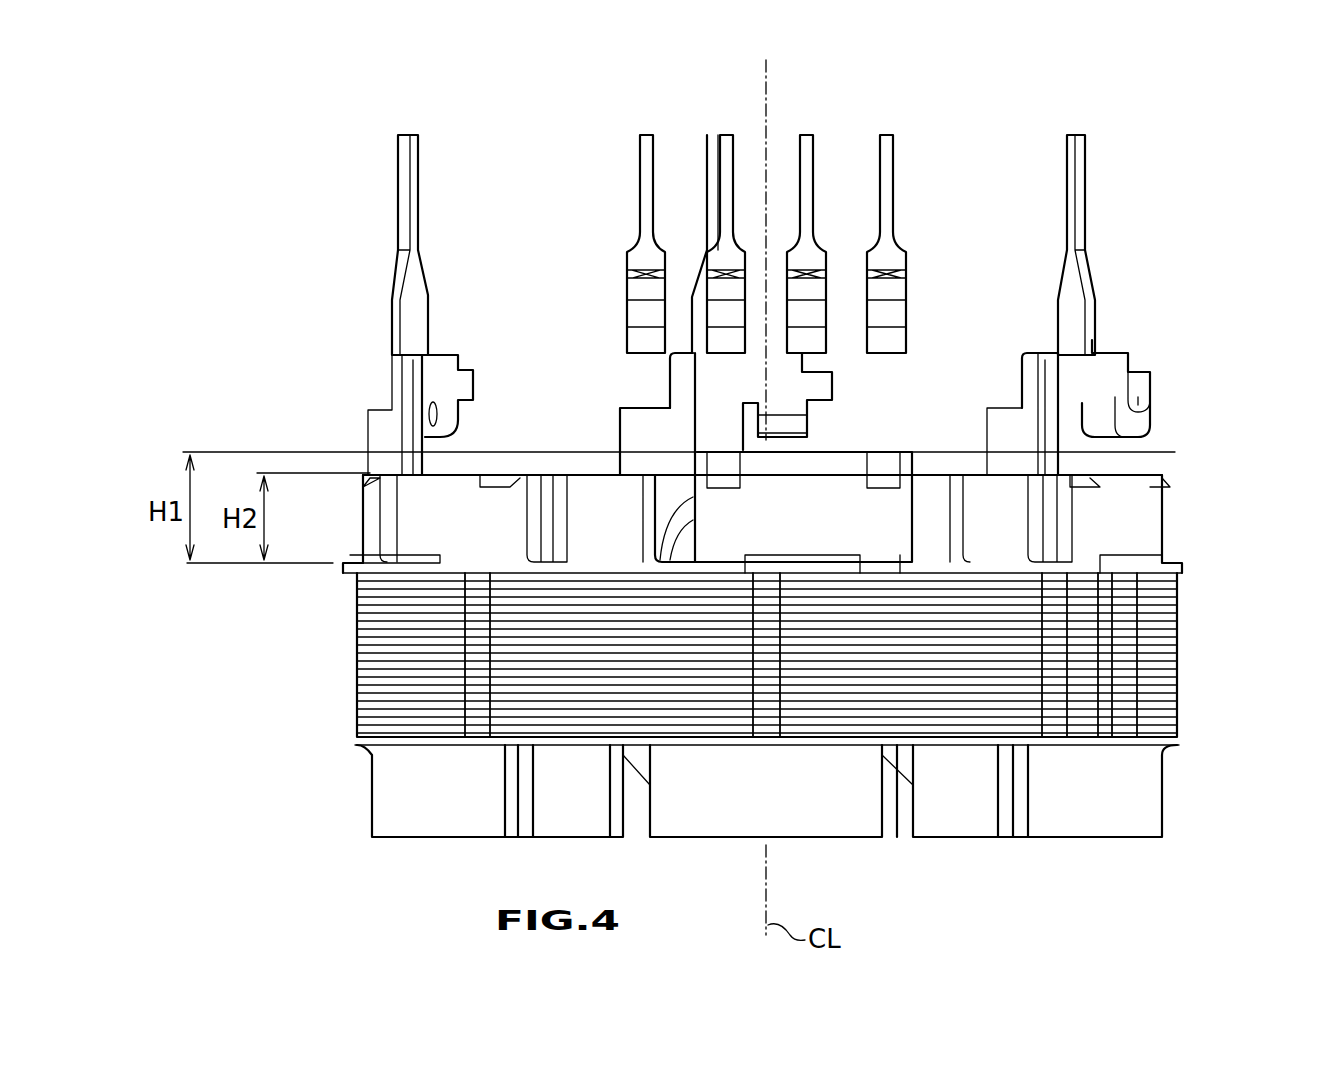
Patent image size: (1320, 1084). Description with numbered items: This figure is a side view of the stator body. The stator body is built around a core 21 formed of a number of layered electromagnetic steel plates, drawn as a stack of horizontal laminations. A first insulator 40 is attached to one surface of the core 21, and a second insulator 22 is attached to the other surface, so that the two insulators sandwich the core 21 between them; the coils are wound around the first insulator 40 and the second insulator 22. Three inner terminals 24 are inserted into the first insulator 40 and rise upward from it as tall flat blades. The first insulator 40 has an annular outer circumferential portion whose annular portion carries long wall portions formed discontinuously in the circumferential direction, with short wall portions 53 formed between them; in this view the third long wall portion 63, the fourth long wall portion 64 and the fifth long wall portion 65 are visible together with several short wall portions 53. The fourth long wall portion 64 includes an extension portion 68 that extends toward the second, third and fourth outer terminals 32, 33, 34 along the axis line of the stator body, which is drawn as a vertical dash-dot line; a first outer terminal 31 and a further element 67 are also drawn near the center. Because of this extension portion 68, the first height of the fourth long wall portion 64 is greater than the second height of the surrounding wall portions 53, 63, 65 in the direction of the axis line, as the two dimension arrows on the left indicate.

The core 21 is at (1150, 645).
The second insulator 22 is at (1150, 805).
The inner terminal 24 is at (398, 158).
The pin 31 is at (646, 135).
The second outer terminal 32 is at (726, 135).
The third outer terminal 33 is at (806, 135).
The fourth outer terminal 34 is at (886, 135).
The first insulator 40 is at (1160, 462).
The short wall portion 53 is at (370, 502).
The third long wall portion 63 is at (1120, 525).
The fourth long wall portion 64 is at (813, 535).
The fifth long wall portion 65 is at (450, 522).
The projection 67 is at (822, 452).
The extension portion 68 is at (850, 465).